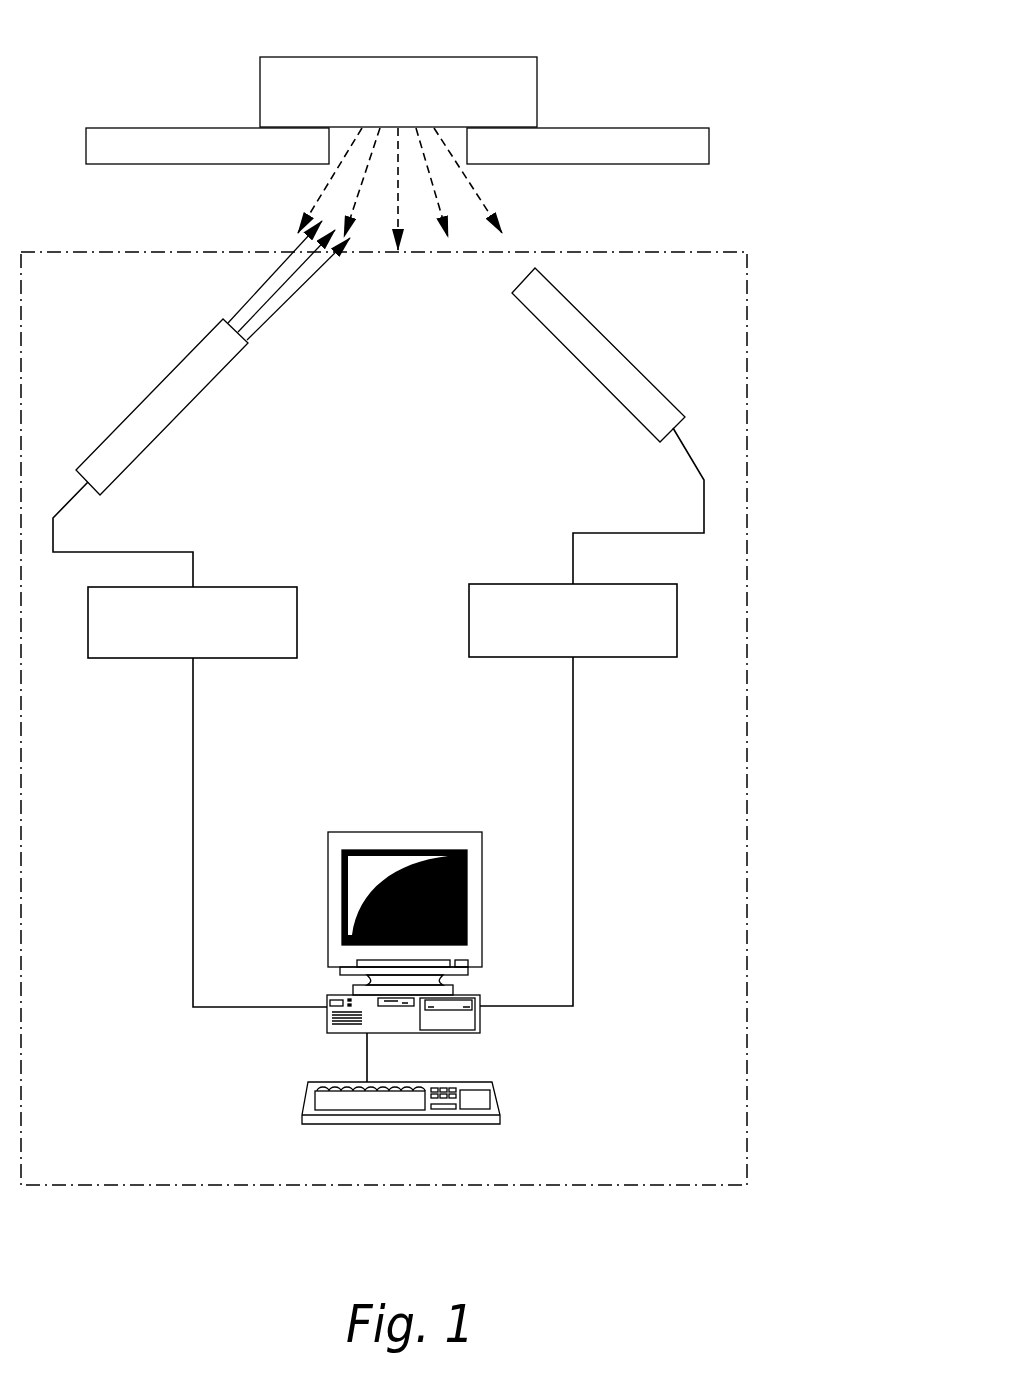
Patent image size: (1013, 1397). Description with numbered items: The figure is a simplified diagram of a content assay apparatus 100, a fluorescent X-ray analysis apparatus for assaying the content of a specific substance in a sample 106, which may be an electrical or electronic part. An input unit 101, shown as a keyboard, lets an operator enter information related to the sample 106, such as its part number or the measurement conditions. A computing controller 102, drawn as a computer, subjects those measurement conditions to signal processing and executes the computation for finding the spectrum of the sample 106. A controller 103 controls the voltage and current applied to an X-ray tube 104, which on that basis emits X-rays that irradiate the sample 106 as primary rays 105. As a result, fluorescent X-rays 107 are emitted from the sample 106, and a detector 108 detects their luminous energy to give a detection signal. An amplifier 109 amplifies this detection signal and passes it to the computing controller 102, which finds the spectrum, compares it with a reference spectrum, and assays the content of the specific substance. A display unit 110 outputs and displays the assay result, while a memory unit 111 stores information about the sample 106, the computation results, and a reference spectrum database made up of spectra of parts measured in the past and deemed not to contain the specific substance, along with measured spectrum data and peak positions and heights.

The content assay apparatus 100 is at (617, 1190).
The input unit 101 is at (473, 1122).
The computing controller 102 is at (327, 1022).
The controller 103 is at (220, 587).
The X-ray tube 104 is at (183, 355).
The primary rays 105 is at (243, 288).
The sample 106 is at (483, 55).
The fluorescent X-rays 107 is at (518, 210).
The detector 108 is at (608, 335).
The amplifier 109 is at (537, 583).
The display unit 110 is at (396, 832).
The memory unit 111 is at (480, 1030).